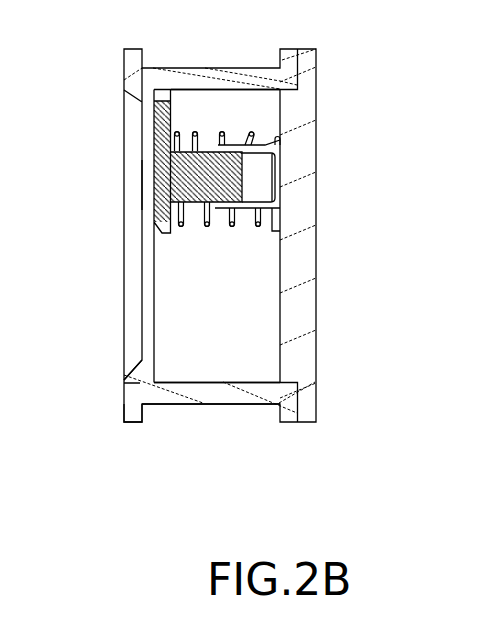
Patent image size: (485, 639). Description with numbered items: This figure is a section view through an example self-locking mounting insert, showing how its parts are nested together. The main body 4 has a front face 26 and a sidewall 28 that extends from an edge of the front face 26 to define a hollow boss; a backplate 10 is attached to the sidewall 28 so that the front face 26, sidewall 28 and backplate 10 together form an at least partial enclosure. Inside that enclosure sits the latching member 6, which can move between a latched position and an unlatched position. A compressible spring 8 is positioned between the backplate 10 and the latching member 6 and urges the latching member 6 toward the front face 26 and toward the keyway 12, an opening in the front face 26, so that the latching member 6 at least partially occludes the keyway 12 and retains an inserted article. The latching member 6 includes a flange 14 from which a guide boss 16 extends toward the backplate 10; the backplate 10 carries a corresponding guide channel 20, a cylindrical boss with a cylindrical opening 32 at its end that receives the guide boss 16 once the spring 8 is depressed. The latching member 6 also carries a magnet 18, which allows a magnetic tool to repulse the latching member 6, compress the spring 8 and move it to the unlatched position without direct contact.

The main body 4 is at (118, 462).
The latching member 6 is at (206, 98).
The spring 8 is at (250, 131).
The backplate 10 is at (344, 86).
The keyway 12 is at (75, 253).
The flange 14 is at (155, 105).
The guide boss 16 is at (193, 158).
The magnet 18 is at (152, 185).
The guide channel 20 is at (271, 212).
The front face 26 is at (137, 384).
The sidewall 28 is at (187, 397).
The opening 32 is at (258, 178).